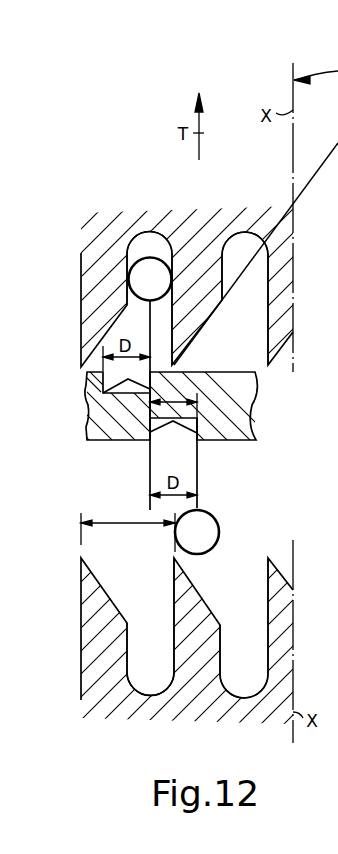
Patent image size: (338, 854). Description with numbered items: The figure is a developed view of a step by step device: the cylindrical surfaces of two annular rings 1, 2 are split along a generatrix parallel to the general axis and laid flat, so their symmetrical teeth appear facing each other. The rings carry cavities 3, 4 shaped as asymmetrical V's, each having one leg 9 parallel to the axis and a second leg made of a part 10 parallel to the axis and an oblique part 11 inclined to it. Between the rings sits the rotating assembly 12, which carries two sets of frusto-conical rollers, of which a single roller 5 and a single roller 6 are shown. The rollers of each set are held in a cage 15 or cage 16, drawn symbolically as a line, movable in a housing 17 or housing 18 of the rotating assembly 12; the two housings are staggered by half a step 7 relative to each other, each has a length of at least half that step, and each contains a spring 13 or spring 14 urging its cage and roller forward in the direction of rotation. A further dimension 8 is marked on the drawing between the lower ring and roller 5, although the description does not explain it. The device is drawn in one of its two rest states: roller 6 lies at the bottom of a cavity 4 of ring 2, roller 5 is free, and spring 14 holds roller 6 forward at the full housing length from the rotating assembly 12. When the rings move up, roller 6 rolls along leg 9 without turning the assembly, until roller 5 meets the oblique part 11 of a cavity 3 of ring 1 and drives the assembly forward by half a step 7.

The annular ring 1 is at (198, 668).
The annular ring 2 is at (187, 230).
The cavity 3 is at (150, 680).
The cavity 4 is at (148, 242).
The frusto-conical roller 5 is at (197, 532).
The frusto-conical roller 6 is at (150, 279).
The step 7 is at (173, 400).
The offset dimension 8 is at (138, 521).
The leg 9 is at (167, 338).
The part of leg 10 is at (222, 262).
The oblique part 11 is at (210, 317).
The rotating assembly 12 is at (90, 418).
The spring 13 is at (186, 436).
The spring 14 is at (110, 365).
The cage 15 is at (197, 488).
The cage 16 is at (150, 310).
The housing 17 is at (160, 437).
The housing 18 is at (100, 391).